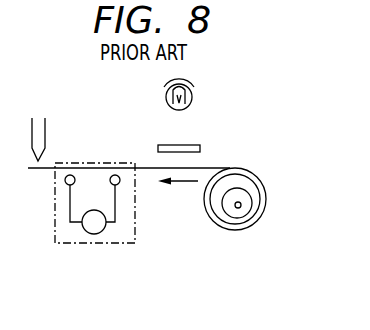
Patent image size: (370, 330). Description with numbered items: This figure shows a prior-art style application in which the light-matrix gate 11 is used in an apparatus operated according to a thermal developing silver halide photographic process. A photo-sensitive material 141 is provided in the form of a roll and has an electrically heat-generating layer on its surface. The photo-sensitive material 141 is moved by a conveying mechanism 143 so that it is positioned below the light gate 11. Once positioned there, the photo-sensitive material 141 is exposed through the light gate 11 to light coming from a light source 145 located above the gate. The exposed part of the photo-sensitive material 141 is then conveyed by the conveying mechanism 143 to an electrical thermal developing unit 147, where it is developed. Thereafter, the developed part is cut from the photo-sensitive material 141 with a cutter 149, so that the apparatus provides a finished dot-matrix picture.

The light-matrix gate 11 is at (200, 145).
The photo-sensitive material 141 is at (233, 170).
The conveying mechanism 143 is at (241, 205).
The light source 145 is at (193, 98).
The electrical thermal developing unit 147 is at (136, 216).
The cutter 149 is at (46, 138).